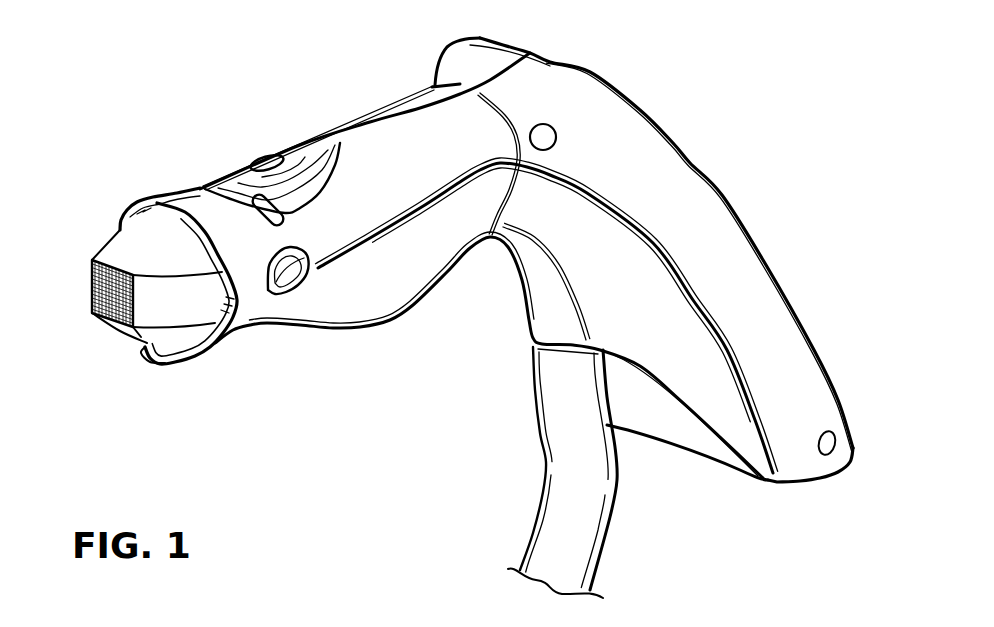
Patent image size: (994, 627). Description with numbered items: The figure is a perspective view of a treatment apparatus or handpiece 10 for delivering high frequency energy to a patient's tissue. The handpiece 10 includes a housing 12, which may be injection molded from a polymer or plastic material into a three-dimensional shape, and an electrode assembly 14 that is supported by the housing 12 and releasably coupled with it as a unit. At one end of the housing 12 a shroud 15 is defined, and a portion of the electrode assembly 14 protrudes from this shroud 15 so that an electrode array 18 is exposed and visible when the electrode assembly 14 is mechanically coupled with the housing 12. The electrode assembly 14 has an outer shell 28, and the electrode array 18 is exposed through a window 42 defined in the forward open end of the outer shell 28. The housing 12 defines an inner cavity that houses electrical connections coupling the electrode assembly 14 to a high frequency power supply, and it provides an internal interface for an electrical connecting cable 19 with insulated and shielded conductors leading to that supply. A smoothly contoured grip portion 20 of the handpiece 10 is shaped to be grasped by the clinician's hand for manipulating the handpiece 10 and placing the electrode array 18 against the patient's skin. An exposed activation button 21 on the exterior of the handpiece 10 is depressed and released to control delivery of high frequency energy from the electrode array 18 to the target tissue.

The handpiece 10 is at (736, 79).
The housing 12 is at (402, 273).
The electrode assembly 14 is at (190, 302).
The shroud 15 is at (167, 191).
The electrode array 18 is at (92, 309).
The electrical connecting cable 19 is at (607, 545).
The grip portion 20 is at (330, 333).
The activation button 21 is at (265, 158).
The outer shell 28 is at (126, 243).
The window 42 is at (100, 282).